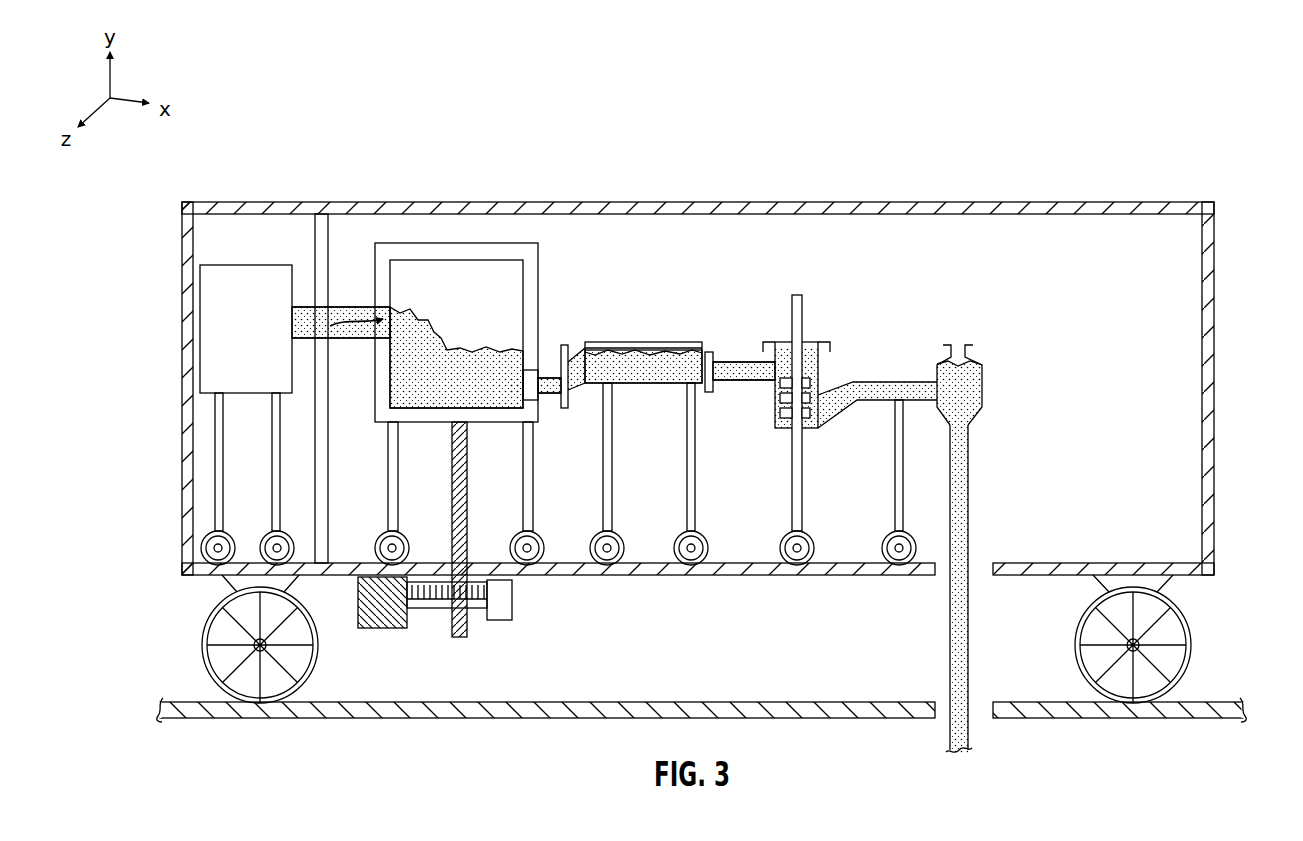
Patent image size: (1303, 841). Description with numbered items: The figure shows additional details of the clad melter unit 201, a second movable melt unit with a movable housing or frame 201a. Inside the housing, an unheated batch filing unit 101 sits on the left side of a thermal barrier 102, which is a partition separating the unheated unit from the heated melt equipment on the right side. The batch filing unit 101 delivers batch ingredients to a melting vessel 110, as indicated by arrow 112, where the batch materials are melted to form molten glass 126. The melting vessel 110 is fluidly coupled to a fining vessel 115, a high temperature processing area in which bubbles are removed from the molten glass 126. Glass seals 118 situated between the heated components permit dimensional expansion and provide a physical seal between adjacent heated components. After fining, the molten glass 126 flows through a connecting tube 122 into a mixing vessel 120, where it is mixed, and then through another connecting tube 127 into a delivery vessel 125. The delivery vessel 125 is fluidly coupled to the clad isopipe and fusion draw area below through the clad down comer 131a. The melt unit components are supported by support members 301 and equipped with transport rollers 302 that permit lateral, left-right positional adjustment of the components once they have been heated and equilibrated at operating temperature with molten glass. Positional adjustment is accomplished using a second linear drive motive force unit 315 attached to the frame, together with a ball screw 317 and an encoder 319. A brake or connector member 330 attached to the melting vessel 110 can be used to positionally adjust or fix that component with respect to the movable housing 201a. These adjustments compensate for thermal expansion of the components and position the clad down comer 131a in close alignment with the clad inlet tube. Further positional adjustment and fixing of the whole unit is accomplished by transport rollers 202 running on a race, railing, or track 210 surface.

The clad melter unit 201 is at (683, 202).
The movable housing or frame 201a is at (1120, 202).
The unheated batch filing unit 101 is at (240, 267).
The thermal barrier 102 is at (317, 230).
The melting vessel 110 is at (375, 272).
The arrow 112 is at (330, 330).
The molten glass 126 is at (490, 353).
The fining vessel 115 is at (627, 342).
The glass seal 118 is at (566, 345).
The connecting tube 122 is at (728, 383).
The mixing vessel 120 is at (822, 372).
The connecting tube 127 is at (890, 400).
The delivery vessel 125 is at (982, 390).
The clad down comer 131a is at (968, 437).
The support member 301 is at (215, 427).
The transport roller 302 is at (270, 533).
The brake or connector member 330 is at (468, 520).
The second linear drive motive force unit 315 is at (380, 628).
The ball screw 317 is at (442, 610).
The encoder 319 is at (503, 620).
The transport roller 202 is at (203, 632).
The track 210 is at (232, 718).